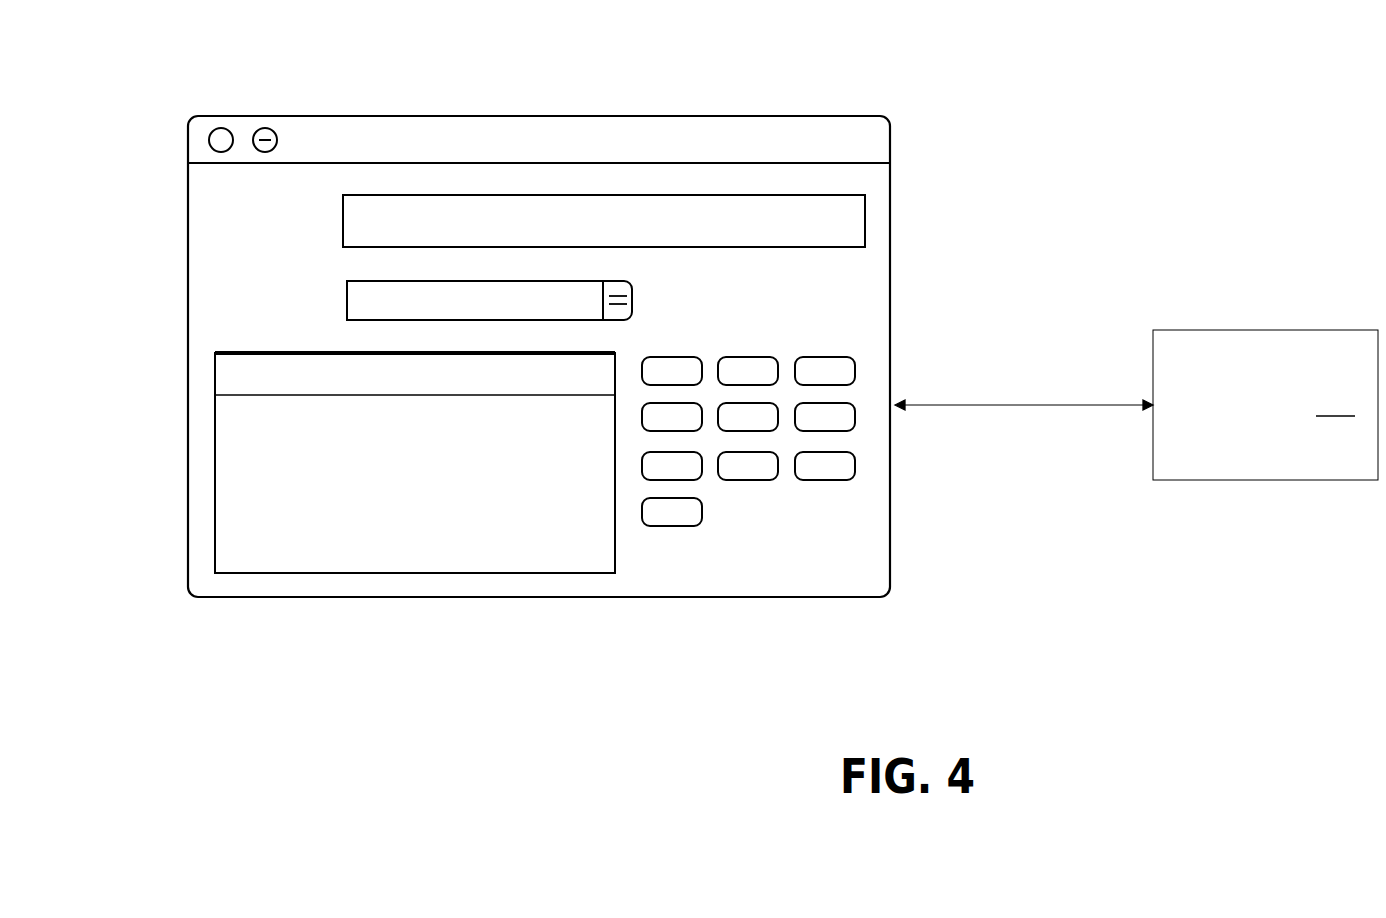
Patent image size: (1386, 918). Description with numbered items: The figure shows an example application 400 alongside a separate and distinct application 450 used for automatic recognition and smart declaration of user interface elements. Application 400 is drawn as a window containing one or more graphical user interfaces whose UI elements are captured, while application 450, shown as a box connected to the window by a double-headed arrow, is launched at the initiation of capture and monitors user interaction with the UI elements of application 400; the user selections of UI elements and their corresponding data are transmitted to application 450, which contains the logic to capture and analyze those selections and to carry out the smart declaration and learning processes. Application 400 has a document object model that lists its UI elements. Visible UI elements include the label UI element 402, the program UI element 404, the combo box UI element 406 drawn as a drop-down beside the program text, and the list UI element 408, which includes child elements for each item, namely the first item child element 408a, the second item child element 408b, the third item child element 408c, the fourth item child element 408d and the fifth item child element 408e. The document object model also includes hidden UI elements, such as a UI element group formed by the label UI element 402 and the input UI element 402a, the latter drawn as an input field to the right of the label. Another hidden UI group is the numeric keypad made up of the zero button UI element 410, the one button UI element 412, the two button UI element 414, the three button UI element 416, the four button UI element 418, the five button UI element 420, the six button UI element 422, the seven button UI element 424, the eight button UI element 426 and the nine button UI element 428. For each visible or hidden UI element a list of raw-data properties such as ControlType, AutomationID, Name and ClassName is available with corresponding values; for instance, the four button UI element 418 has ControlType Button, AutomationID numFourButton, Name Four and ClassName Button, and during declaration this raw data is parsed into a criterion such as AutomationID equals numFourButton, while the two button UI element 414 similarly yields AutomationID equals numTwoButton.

The application 400 is at (808, 108).
The UI element "Label" 402 is at (213, 222).
The UI element "Input" 402a is at (345, 228).
The UI element "Program" 404 is at (220, 297).
The UI element "combo box" 406 is at (660, 312).
The UI element "list" 408 is at (352, 493).
The child element "item 1" 408a is at (297, 372).
The child element "item 2" 408b is at (297, 438).
The child element "item 3" 408c is at (297, 475).
The child element "item 4" 408d is at (297, 505).
The child element "item 5" 408e is at (277, 580).
The UI element "button 0" 410 is at (670, 525).
The UI element "button 1" 412 is at (644, 458).
The UI element "button 2" 414 is at (748, 478).
The UI element "button 3" 416 is at (853, 463).
The UI element "button 4" 418 is at (644, 414).
The UI element "button 5" 420 is at (775, 425).
The UI element "button 6" 422 is at (889, 404).
The UI element "button 7" 424 is at (668, 355).
The UI element "button 8" 426 is at (745, 355).
The UI element "button 9" 428 is at (822, 355).
The application 450 is at (1136, 405).